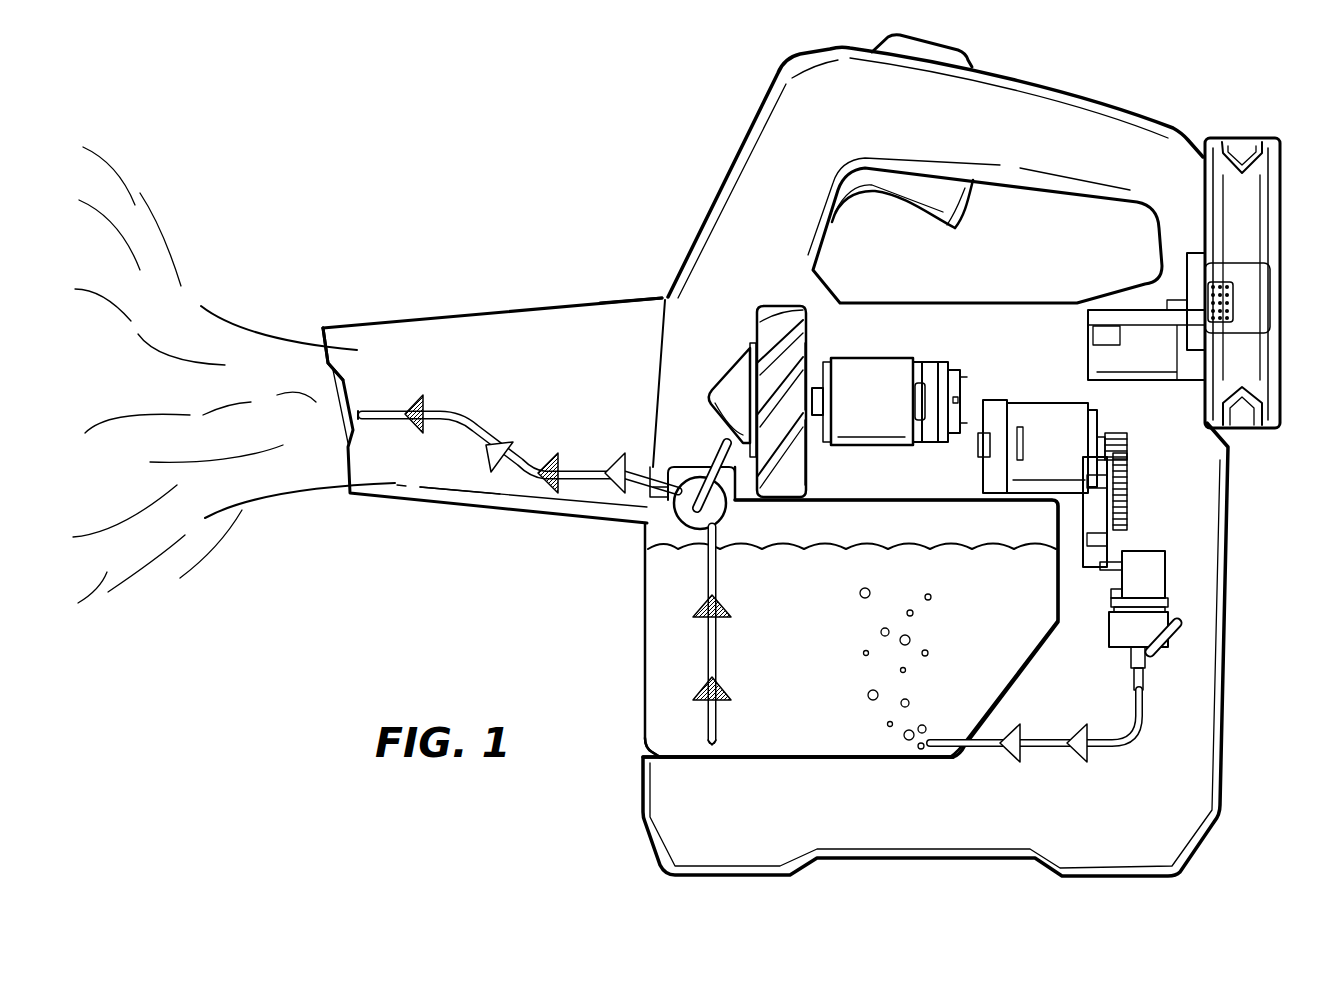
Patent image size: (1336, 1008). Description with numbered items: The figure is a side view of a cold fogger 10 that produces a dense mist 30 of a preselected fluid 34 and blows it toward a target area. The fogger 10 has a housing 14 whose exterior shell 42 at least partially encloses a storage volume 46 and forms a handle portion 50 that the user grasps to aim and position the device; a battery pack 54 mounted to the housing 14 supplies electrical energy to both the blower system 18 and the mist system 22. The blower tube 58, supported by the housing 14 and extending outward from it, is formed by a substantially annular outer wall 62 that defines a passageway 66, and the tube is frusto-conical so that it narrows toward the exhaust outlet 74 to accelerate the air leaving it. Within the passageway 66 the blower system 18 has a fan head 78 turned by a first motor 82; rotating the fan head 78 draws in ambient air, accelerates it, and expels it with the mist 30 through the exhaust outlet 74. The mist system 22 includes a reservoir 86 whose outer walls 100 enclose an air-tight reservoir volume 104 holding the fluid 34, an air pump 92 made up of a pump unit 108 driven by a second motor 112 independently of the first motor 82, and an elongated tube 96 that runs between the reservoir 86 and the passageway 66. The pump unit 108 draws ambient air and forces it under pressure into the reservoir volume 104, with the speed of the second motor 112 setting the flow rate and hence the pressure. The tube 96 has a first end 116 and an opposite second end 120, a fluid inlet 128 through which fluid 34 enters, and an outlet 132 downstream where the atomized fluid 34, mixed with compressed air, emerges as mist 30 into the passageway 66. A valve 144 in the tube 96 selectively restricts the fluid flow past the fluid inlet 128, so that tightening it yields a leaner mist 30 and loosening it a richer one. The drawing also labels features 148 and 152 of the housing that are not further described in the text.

The cold fogger 10 is at (600, 98).
The housing 14 is at (1231, 570).
The blower system 18 is at (780, 313).
The mist system 22 is at (698, 567).
The mist 30 is at (231, 320).
The fluid 34 is at (671, 635).
The exterior shell 42 is at (1226, 708).
The storage volume 46 is at (1014, 820).
The handle portion 50 is at (1073, 133).
The battery pack 54 is at (1255, 188).
The blower tube 58 is at (512, 308).
The annular outer wall 62 is at (590, 300).
The passageway 66 is at (468, 360).
The exhaust outlet 74 is at (324, 340).
The fan head 78 is at (735, 385).
The first motor 82 is at (880, 366).
The reservoir 86 is at (850, 757).
The air pump 92 is at (1154, 562).
The tube 96 is at (723, 581).
The outer walls 100 is at (737, 755).
The reservoir volume 104 is at (806, 708).
The pump unit 108 is at (1120, 632).
The second motor 112 is at (1045, 417).
The first end 116 is at (707, 710).
The second end 120 is at (388, 410).
The fluid inlet 128 is at (717, 760).
The outlet 132 is at (363, 418).
The valve 144 is at (700, 530).
The housing projection 148 is at (945, 38).
The trigger 152 is at (955, 232).